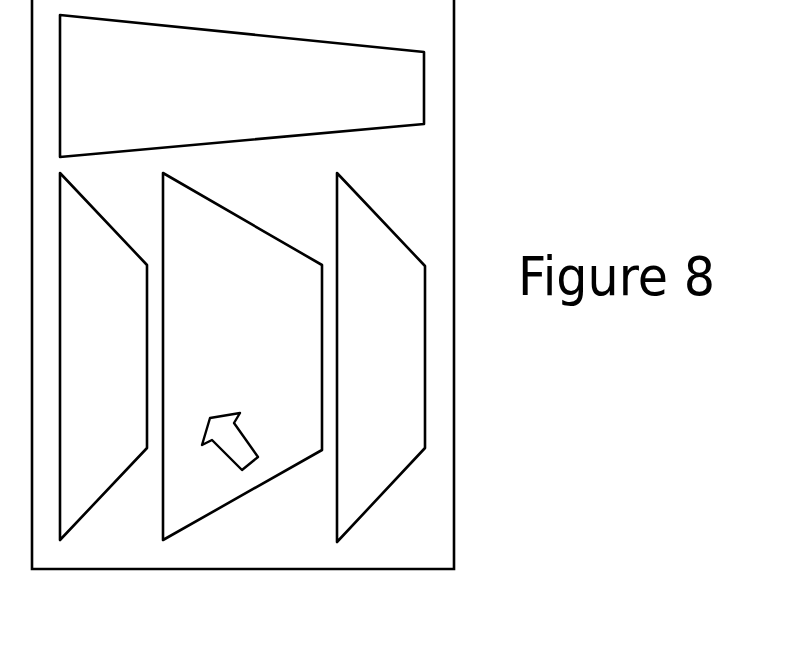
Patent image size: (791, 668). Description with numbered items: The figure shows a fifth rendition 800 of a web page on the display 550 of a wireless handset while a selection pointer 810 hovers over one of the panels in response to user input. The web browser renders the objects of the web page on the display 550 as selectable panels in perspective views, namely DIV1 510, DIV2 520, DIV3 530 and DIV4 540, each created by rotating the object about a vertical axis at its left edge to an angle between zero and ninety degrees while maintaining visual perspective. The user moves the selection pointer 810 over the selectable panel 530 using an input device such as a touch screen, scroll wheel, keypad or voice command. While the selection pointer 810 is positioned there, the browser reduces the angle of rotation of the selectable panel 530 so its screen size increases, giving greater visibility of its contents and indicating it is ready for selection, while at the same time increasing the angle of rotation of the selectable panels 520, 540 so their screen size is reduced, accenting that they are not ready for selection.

The fifth rendition 800 is at (339, 284).
The display 550 is at (386, 33).
The selectable panel DIV1 510 is at (203, 120).
The selectable panel DIV2 520 is at (135, 389).
The selectable panel DIV3 530 is at (268, 388).
The selectable panel DIV4 540 is at (412, 389).
The selection pointer 810 is at (248, 472).